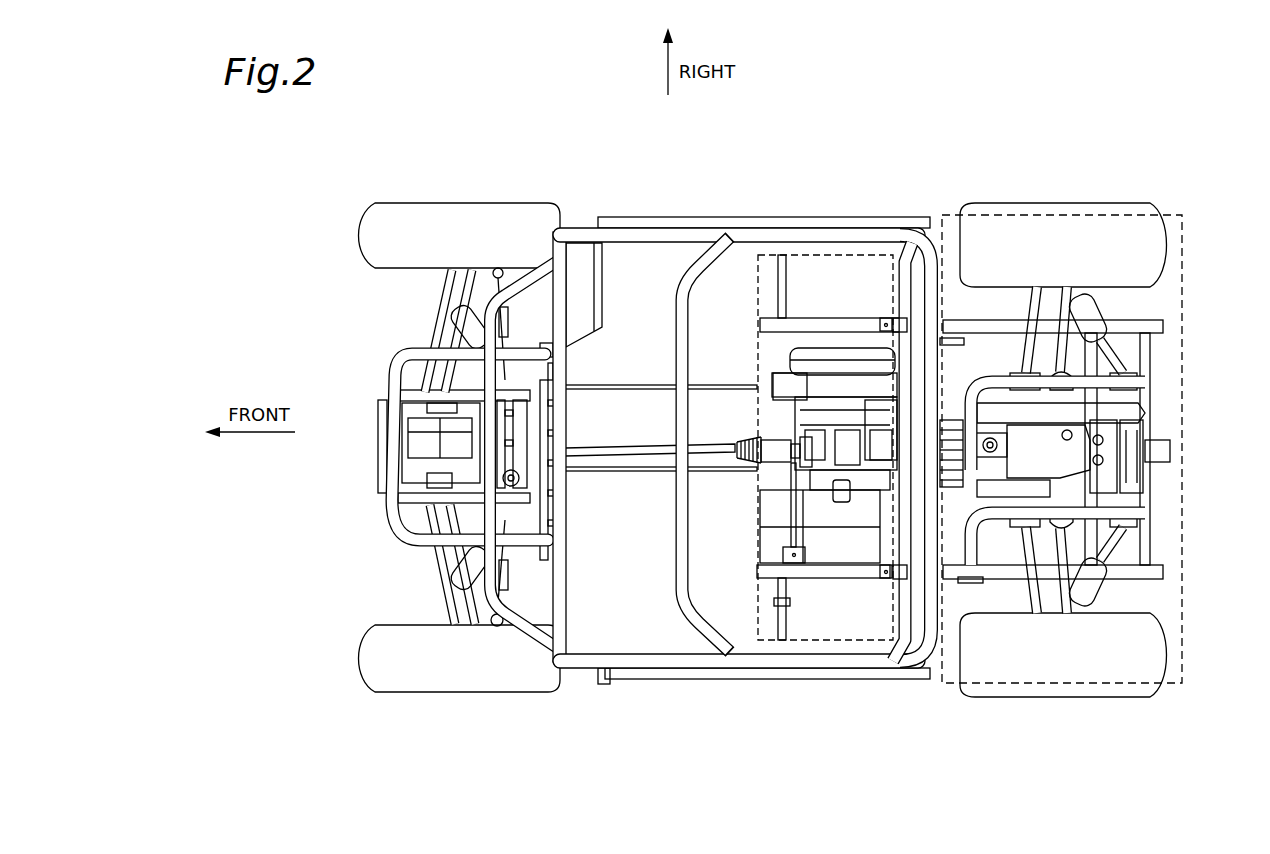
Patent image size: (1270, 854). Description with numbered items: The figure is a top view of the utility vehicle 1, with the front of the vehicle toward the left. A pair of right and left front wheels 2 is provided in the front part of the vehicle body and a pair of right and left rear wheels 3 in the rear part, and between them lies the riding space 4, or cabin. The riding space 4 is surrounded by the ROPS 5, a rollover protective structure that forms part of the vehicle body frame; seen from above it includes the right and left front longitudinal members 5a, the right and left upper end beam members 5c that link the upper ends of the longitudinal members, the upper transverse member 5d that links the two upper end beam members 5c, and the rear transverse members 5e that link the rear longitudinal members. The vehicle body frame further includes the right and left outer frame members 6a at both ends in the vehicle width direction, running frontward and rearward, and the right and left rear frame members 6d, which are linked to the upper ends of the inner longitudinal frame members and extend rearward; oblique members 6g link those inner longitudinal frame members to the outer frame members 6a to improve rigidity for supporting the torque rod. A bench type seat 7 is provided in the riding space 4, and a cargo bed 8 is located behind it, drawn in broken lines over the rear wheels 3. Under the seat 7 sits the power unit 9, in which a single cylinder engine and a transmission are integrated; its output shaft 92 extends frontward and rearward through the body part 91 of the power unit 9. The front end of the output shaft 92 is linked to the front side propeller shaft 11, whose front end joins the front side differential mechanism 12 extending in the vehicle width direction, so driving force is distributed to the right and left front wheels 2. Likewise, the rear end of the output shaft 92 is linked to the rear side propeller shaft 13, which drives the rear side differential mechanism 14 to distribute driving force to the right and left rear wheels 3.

The utility vehicle 1 is at (1167, 150).
The front wheels 2 is at (457, 222).
The rear wheels 3 is at (1055, 230).
The riding space 4 is at (736, 262).
The ROPS 5 is at (907, 172).
The front longitudinal members 5a is at (620, 238).
The upper end beam members 5c is at (808, 228).
The upper transverse member 5d is at (698, 268).
The rear transverse members 5e is at (913, 253).
The outer frame members 6a is at (679, 680).
The rear frame members 6d is at (832, 318).
The oblique members 6g is at (783, 606).
The seat 7 is at (828, 610).
The cargo bed 8 is at (1177, 252).
The power unit 9 is at (834, 520).
The body part 91 is at (887, 465).
The output shaft 92 is at (770, 470).
The front side propeller shaft 11 is at (650, 450).
The front side differential mechanism 12 is at (533, 460).
The rear side propeller shaft 13 is at (982, 457).
The rear side differential mechanism 14 is at (1060, 478).